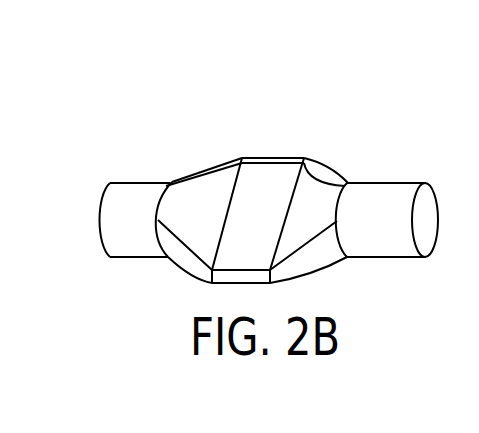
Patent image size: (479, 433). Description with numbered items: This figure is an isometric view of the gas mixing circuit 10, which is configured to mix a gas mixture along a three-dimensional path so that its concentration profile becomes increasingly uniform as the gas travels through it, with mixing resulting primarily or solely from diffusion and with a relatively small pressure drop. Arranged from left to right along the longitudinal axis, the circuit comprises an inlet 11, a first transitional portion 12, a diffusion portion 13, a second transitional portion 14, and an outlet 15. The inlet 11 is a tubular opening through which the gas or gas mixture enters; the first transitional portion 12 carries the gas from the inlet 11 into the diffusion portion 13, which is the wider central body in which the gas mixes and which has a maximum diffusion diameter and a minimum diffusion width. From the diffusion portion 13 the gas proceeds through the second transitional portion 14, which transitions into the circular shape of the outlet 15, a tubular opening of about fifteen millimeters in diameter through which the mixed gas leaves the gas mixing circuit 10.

The gas mixing circuit 10 is at (90, 108).
The inlet 11 is at (132, 183).
The first transitional portion 12 is at (210, 185).
The diffusion portion 13 is at (265, 188).
The second transitional portion 14 is at (322, 182).
The outlet 15 is at (387, 184).